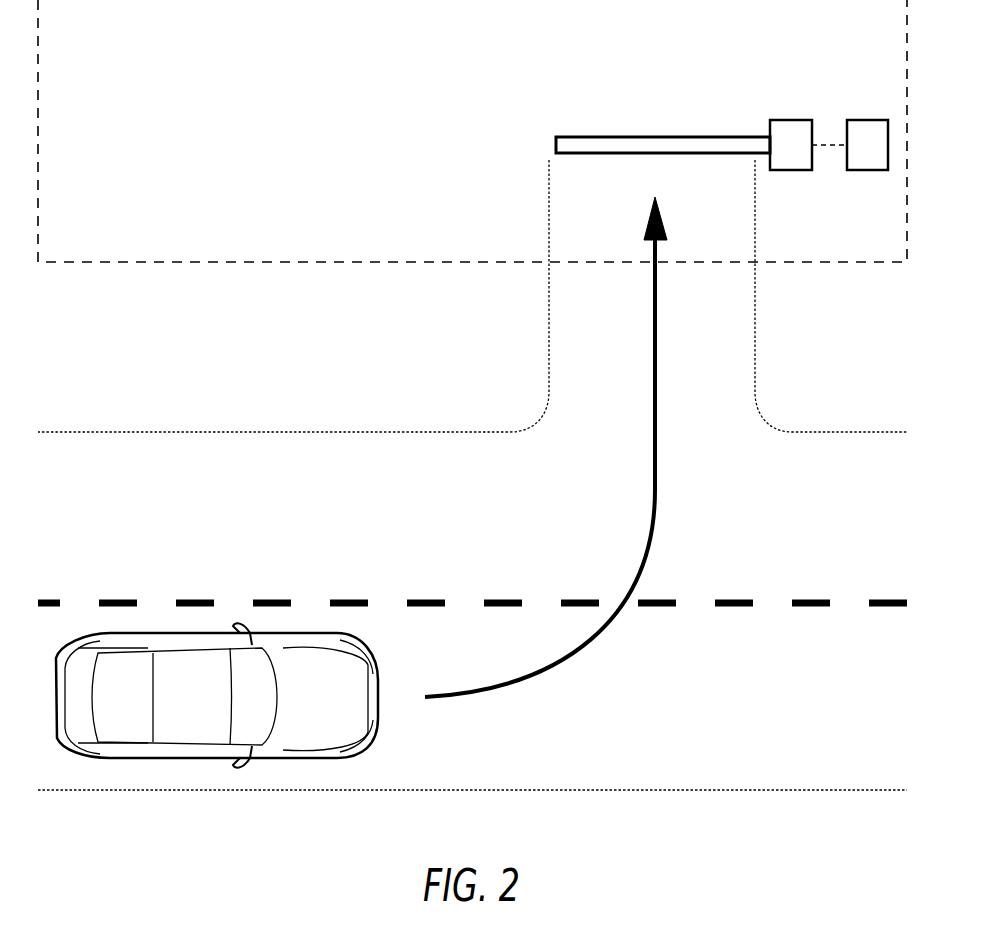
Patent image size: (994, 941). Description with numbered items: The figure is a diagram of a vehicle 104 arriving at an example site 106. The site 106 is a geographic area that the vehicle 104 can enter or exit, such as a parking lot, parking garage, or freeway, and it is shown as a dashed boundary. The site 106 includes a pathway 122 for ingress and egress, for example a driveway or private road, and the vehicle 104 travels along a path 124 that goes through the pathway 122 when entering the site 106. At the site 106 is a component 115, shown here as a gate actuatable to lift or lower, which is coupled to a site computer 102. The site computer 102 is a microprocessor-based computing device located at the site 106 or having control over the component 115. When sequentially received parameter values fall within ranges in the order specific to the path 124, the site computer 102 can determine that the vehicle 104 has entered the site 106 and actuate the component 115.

The site computer 102 is at (863, 120).
The vehicle 104 is at (212, 758).
The site 106 is at (137, 263).
The component 115 is at (782, 120).
The pathway 122 is at (755, 337).
The path 124 is at (657, 480).